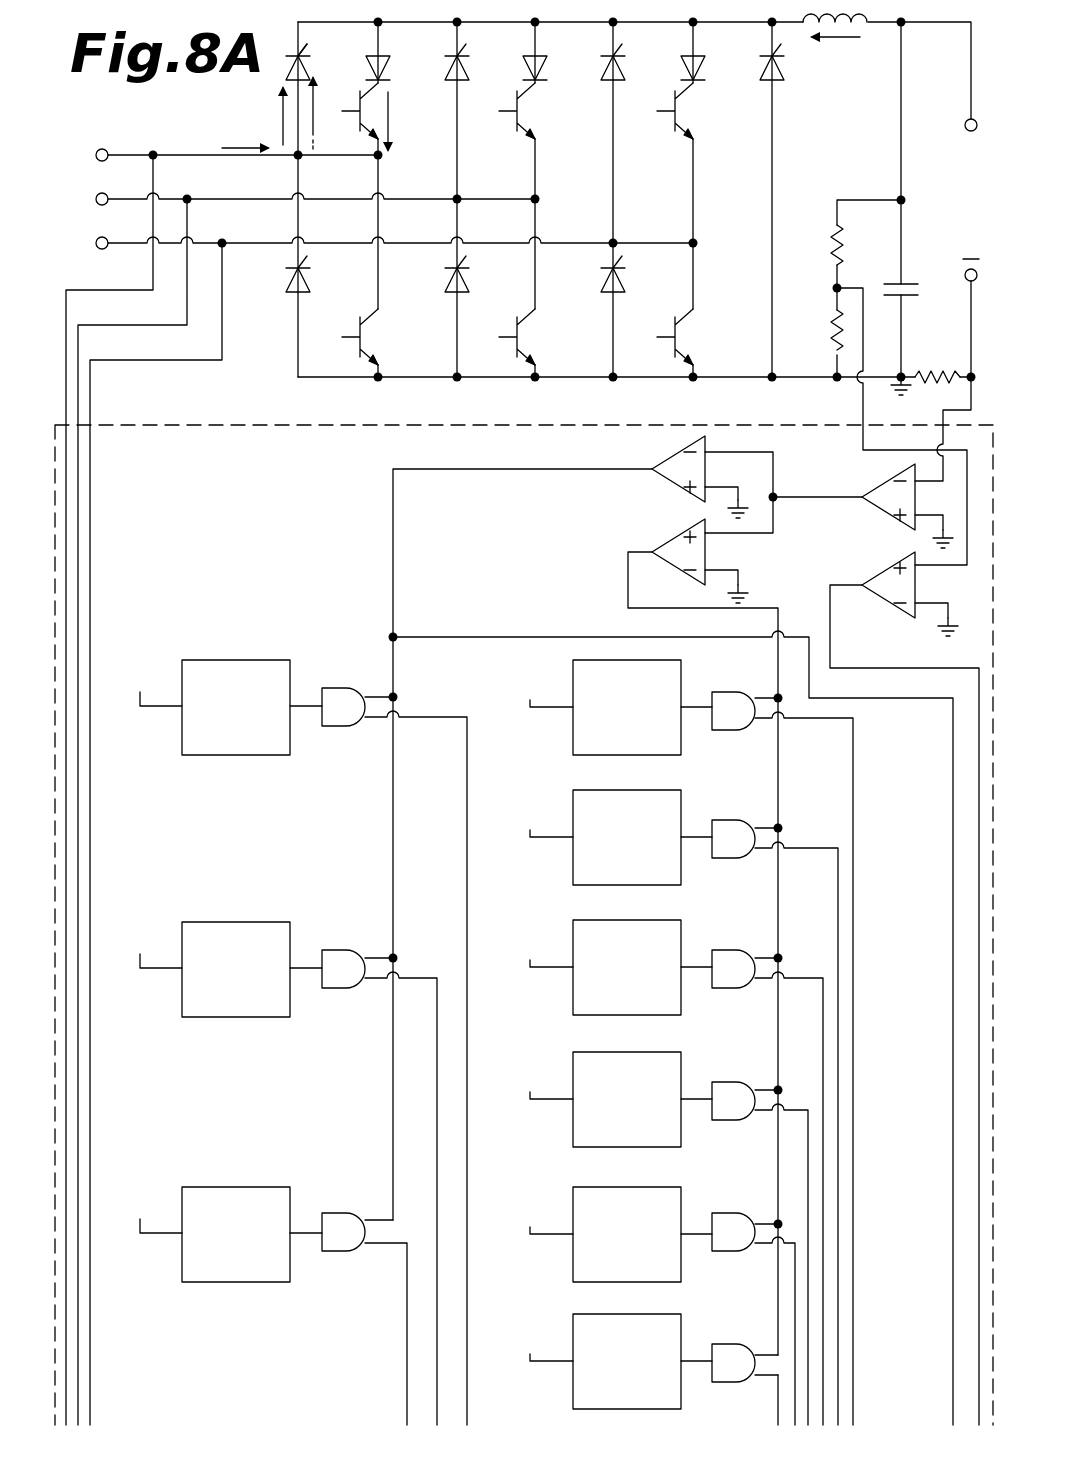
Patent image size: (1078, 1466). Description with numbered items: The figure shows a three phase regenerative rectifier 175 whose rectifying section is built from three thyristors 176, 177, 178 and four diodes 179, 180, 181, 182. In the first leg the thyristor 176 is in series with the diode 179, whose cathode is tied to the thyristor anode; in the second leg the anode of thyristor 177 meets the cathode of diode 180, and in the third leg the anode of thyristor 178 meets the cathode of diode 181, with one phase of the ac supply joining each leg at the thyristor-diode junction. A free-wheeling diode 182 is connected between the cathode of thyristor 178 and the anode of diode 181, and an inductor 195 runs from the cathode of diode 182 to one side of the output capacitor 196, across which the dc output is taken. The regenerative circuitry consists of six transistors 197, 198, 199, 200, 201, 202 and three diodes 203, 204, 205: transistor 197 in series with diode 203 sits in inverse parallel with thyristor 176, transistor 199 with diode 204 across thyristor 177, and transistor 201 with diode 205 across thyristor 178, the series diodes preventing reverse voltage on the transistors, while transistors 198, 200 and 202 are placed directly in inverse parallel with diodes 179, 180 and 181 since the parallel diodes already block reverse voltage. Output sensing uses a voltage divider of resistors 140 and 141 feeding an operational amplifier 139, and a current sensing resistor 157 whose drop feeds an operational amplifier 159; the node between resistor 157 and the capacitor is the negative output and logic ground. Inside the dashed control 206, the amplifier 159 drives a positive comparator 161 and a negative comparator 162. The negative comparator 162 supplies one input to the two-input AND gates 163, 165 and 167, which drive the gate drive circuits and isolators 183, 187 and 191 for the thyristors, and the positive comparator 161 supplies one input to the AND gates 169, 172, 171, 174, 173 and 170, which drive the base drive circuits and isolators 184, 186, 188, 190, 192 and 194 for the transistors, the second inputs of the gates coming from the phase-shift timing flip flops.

The three phase regenerative rectifier 175 is at (140, 110).
The thyristor 176 is at (285, 68).
The thyristor 177 is at (386, 64).
The thyristor 178 is at (543, 64).
The diode 179 is at (286, 288).
The diode 180 is at (446, 288).
The diode 181 is at (602, 288).
The free-wheeling diode 182 is at (706, 64).
The inductor 195 is at (858, 27).
The transistor 197 is at (359, 124).
The transistor 198 is at (359, 348).
The transistor 199 is at (516, 124).
The transistor 200 is at (516, 348).
The transistor 201 is at (674, 124).
The transistor 202 is at (674, 348).
The diode 203 is at (309, 46).
The diode 204 is at (467, 58).
The diode 205 is at (623, 58).
The resistor 140 is at (830, 245).
The resistor 141 is at (830, 334).
The capacitor 196 is at (896, 286).
The resistor 157 is at (948, 371).
The control 206 is at (246, 430).
The negative comparator 162 is at (674, 459).
The positive comparator 161 is at (676, 535).
The operational amplifier 159 is at (874, 484).
The operational amplifier 139 is at (876, 568).
The gate drive circuit and isolator 183 is at (240, 662).
The gate drive circuit and isolator 187 is at (240, 924).
The gate drive circuit and isolator 191 is at (240, 1189).
The two-input AND gate 163 is at (346, 682).
The two-input AND gate 165 is at (346, 944).
The two-input AND gate 167 is at (346, 1207).
The base drive circuit and isolator 184 is at (622, 662).
The base drive circuit and isolator 186 is at (622, 792).
The base drive circuit and isolator 188 is at (622, 922).
The base drive circuit and isolator 190 is at (622, 1054).
The base drive circuit and isolator 192 is at (622, 1189).
The base drive circuit and isolator 194 is at (622, 1316).
The two-input AND gate 169 is at (734, 694).
The two-input AND gate 172 is at (734, 822).
The two-input AND gate 171 is at (740, 942).
The two-input AND gate 174 is at (740, 1074).
The two-input AND gate 173 is at (740, 1205).
The two-input AND gate 170 is at (740, 1335).